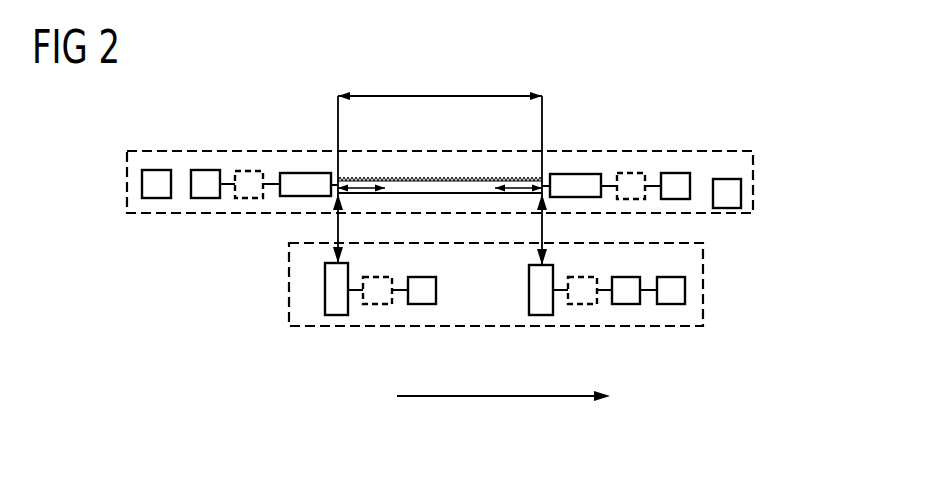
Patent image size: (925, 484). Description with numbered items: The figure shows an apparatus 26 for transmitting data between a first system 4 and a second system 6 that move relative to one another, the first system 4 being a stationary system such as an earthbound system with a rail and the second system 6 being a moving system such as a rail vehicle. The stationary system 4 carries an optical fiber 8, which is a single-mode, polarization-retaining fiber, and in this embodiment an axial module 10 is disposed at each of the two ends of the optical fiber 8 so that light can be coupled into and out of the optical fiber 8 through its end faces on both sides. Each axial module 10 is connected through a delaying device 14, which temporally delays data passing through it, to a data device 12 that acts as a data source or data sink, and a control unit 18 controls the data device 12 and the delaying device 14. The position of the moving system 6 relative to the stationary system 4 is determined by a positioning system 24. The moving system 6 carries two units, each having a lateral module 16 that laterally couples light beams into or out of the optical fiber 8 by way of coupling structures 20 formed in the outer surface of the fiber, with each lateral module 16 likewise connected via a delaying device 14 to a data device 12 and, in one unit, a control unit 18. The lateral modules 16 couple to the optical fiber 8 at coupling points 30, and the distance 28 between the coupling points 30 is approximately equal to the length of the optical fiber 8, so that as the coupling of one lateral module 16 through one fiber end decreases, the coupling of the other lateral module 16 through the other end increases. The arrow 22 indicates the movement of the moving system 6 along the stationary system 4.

The first system 4 is at (190, 213).
The second system 6 is at (289, 292).
The optical fiber 8 is at (410, 187).
The axial module 10 is at (303, 173).
The data device 12 is at (204, 170).
The delaying device 14 is at (250, 171).
The lateral module 16 is at (336, 315).
The control unit 18 is at (153, 170).
The coupling structures 20 is at (488, 178).
The arrow 22 is at (500, 398).
The positioning system 24 is at (741, 195).
The apparatus 26 is at (798, 138).
The distance 28 is at (443, 96).
The coupling points 30 is at (335, 200).